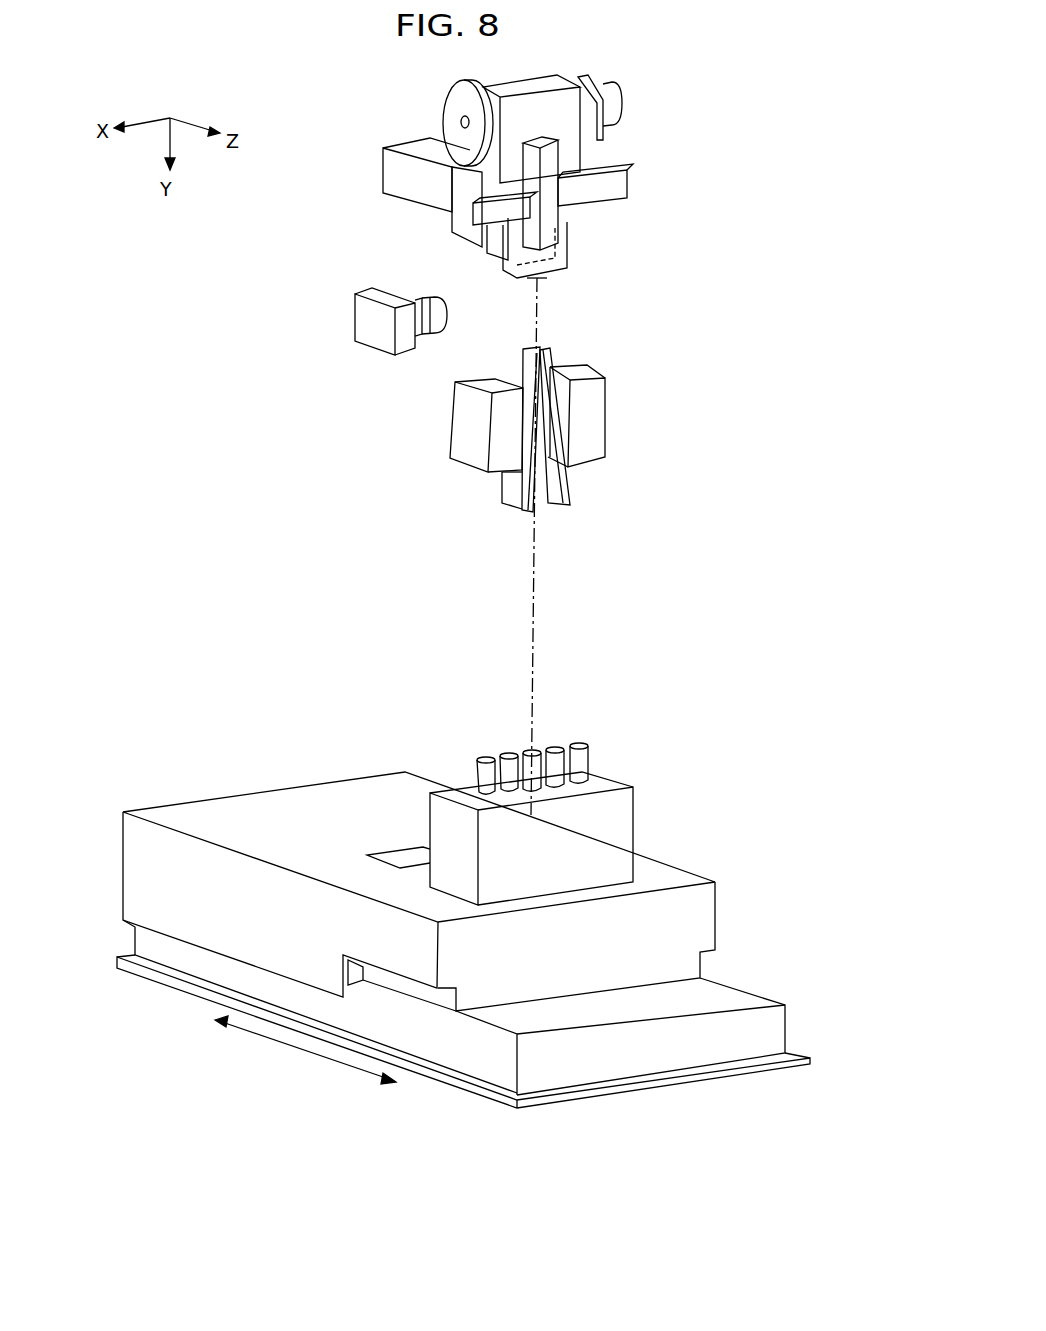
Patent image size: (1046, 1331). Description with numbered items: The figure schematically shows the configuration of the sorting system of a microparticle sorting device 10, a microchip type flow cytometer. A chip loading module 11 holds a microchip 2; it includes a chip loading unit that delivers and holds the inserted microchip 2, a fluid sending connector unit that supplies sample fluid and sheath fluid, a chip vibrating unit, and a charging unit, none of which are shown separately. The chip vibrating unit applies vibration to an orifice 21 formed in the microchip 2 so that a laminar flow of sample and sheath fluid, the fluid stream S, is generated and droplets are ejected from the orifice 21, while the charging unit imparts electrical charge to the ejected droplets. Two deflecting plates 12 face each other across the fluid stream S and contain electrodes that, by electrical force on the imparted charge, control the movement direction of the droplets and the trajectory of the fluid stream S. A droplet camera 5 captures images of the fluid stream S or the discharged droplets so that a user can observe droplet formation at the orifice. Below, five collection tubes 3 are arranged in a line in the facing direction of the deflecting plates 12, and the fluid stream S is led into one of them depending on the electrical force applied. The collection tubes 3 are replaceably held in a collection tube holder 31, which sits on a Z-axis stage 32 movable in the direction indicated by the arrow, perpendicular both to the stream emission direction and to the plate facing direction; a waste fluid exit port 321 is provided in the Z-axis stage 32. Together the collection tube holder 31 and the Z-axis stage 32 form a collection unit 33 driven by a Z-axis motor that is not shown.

The microparticle sorting device 10 is at (188, 391).
The chip loading module 11 is at (624, 92).
The microchip 2 is at (569, 242).
The orifice 21 is at (540, 278).
The fluid stream S is at (540, 322).
The droplet camera 5 is at (364, 292).
The deflecting plate 12 is at (638, 413).
The collection tube 3 is at (588, 763).
The collection unit 33 is at (250, 1128).
The collection tube holder 31 is at (507, 900).
The Z-axis stage 32 is at (558, 997).
The waste fluid exit port 321 is at (367, 855).